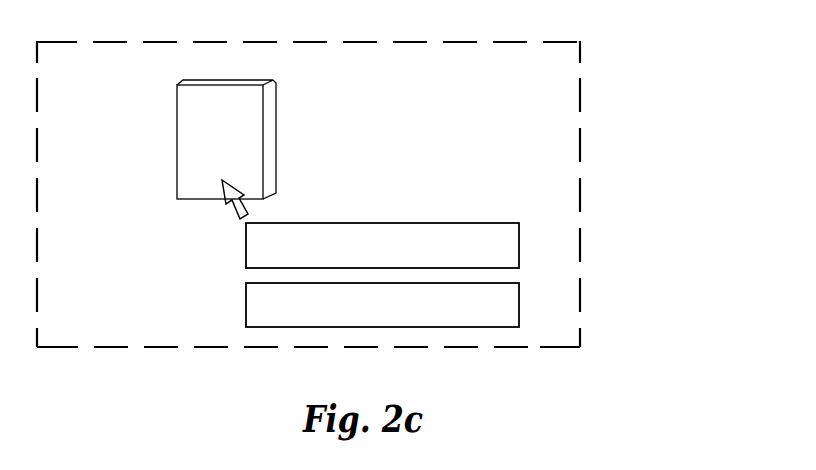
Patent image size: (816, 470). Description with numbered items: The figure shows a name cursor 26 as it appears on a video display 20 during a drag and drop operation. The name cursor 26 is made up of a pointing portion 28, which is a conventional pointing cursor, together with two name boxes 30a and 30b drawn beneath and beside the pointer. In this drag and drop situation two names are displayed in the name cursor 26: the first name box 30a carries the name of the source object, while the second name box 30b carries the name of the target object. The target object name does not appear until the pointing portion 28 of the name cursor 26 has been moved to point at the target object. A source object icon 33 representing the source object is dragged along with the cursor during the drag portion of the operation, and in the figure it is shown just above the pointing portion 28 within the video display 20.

The video display 20 is at (582, 102).
The source object icon 33 is at (195, 123).
The pointing portion 28 is at (236, 206).
The name box 30a is at (436, 231).
The name box 30b is at (441, 314).
The name cursor 26 is at (240, 270).